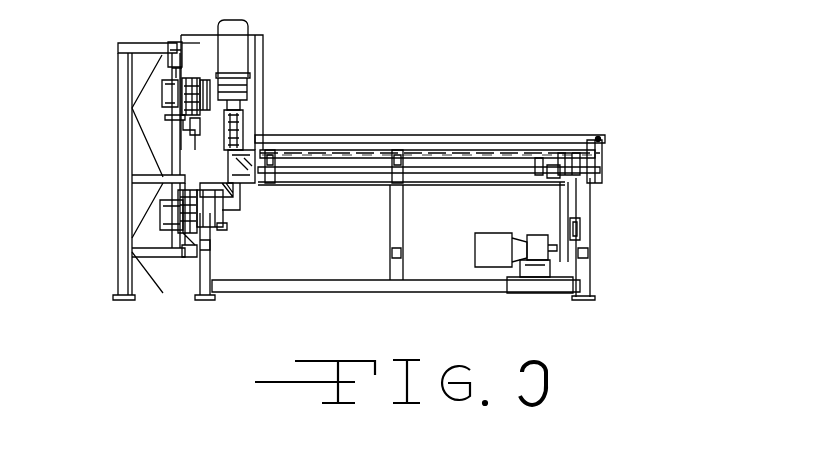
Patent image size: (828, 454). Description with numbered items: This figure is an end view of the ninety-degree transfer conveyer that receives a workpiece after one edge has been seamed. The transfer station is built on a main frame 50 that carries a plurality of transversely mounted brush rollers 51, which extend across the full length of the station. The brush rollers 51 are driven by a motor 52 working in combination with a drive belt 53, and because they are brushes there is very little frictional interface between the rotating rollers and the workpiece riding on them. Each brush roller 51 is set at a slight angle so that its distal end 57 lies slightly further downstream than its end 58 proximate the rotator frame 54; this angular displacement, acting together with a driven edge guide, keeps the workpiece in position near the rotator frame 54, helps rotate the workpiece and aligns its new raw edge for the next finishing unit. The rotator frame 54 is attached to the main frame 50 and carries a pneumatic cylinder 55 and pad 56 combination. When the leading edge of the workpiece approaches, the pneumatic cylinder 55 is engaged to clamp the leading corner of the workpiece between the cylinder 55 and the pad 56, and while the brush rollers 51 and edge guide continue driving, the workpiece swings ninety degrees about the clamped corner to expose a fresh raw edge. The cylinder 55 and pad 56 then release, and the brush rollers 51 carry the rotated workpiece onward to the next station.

The main frame 50 is at (372, 286).
The brush rollers 51 is at (418, 150).
The motor 52 is at (523, 292).
The drive belt 53 is at (560, 207).
The rotator frame 54 is at (140, 213).
The pneumatic cylinder 55 is at (132, 108).
The pad 56 is at (245, 183).
The distal end 57 is at (573, 150).
The end proximate the rotator frame 58 is at (280, 135).